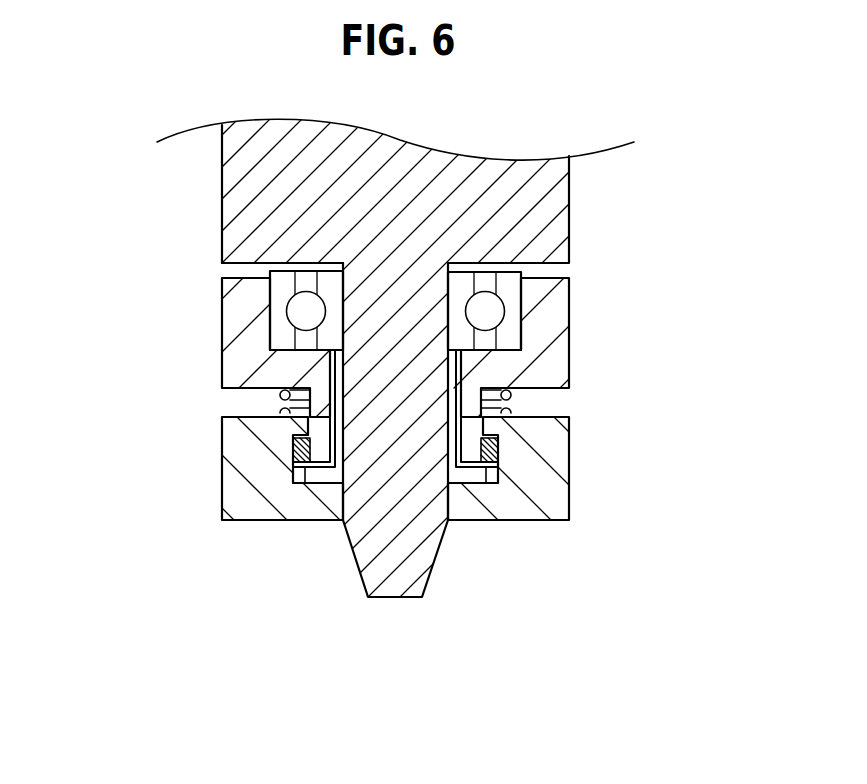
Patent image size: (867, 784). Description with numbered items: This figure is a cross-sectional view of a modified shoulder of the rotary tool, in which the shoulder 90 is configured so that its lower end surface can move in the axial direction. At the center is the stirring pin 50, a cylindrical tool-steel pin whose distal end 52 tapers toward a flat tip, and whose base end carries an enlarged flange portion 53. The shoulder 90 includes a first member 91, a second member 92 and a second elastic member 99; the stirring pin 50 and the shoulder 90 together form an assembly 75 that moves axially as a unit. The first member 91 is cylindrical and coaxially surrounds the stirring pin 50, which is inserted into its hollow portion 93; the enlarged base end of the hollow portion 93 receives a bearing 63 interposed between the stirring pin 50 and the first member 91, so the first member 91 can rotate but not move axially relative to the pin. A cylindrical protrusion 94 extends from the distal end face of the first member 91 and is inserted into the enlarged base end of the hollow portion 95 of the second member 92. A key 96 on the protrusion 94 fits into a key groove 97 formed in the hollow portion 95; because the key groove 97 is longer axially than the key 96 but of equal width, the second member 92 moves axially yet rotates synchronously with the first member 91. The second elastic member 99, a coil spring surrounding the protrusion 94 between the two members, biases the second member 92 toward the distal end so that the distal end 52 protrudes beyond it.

The stirring pin 50 is at (389, 305).
The distal end 52 is at (412, 570).
The flange portion 53 is at (240, 239).
The bearing 63 is at (507, 282).
The assembly 75 is at (245, 598).
The shoulder 90 is at (168, 307).
The first member 91 is at (250, 342).
The second member 92 is at (241, 437).
The hollow portion 93 is at (523, 327).
The protrusion 94 is at (320, 437).
The hollow portion 95 is at (471, 437).
The key 96 is at (292, 453).
The key groove 97 is at (296, 477).
The second elastic member 99 is at (510, 407).